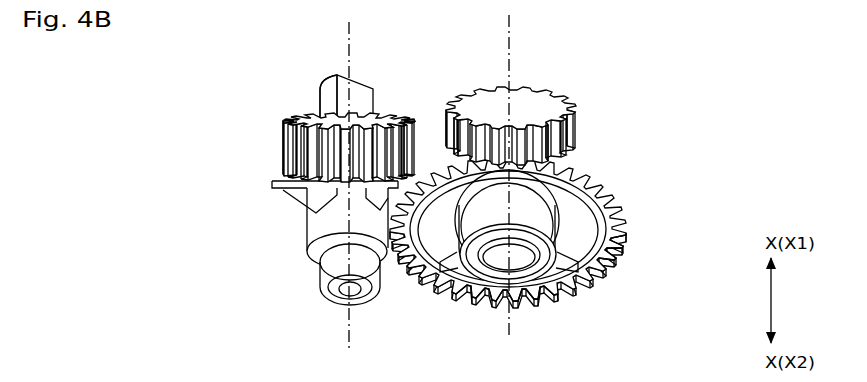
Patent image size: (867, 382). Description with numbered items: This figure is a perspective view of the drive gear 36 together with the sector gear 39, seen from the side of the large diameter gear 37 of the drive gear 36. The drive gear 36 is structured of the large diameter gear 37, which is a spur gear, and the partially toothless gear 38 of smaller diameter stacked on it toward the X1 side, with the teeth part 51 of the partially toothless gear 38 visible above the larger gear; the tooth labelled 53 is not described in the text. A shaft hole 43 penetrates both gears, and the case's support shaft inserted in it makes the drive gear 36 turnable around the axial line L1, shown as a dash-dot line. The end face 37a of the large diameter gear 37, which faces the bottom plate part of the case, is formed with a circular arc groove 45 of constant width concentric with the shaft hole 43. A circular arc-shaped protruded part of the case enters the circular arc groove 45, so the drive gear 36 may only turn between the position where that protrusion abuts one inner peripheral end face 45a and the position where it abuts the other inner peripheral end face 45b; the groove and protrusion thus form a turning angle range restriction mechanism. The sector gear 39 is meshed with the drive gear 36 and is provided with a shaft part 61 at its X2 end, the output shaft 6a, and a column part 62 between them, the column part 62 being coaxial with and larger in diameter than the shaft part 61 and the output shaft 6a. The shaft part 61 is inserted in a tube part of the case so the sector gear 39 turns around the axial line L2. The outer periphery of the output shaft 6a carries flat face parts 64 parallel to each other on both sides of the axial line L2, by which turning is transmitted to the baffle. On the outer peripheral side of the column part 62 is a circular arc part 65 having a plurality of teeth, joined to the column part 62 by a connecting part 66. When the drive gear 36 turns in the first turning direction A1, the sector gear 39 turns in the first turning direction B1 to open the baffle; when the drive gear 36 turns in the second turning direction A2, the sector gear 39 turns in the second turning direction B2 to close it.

The drive gear 36 is at (542, 204).
The large diameter gear 37 is at (600, 158).
The end face 37a is at (605, 230).
The partially toothless gear 38 is at (575, 118).
The sector gear 39 is at (262, 157).
The shaft hole 43 is at (528, 257).
The circular arc groove 45 is at (575, 205).
The inner peripheral end face 45a is at (450, 265).
The inner peripheral end face 45b is at (577, 240).
The teeth part 51 is at (548, 108).
The tooth 53 is at (453, 108).
The shaft part 61 is at (332, 266).
The column part 62 is at (320, 230).
The flat face parts 64 is at (355, 102).
The output shaft 6a is at (330, 97).
The circular arc part 65 is at (327, 182).
The connecting part 66 is at (315, 208).
The axial line L1 is at (511, 42).
The axial line L2 is at (347, 33).
The first turning direction A1 is at (445, 65).
The second turning direction A2 is at (572, 63).
The first turning direction B1 is at (404, 64).
The second turning direction B2 is at (303, 63).